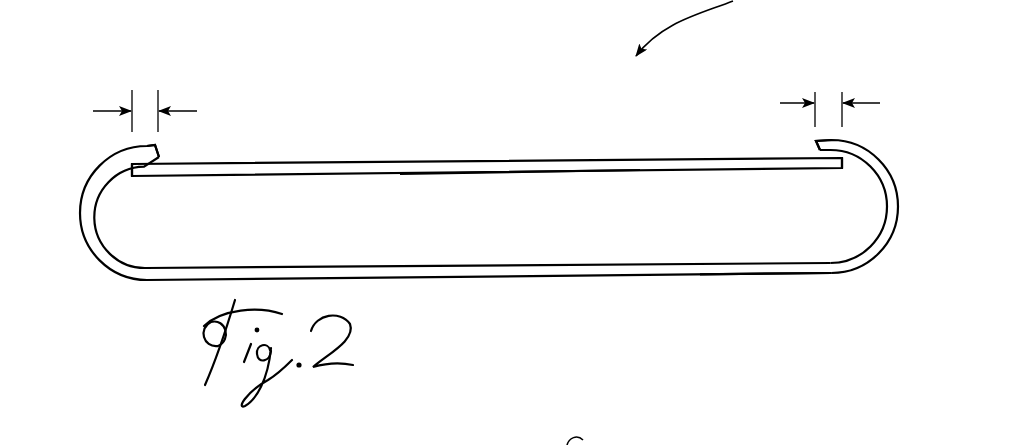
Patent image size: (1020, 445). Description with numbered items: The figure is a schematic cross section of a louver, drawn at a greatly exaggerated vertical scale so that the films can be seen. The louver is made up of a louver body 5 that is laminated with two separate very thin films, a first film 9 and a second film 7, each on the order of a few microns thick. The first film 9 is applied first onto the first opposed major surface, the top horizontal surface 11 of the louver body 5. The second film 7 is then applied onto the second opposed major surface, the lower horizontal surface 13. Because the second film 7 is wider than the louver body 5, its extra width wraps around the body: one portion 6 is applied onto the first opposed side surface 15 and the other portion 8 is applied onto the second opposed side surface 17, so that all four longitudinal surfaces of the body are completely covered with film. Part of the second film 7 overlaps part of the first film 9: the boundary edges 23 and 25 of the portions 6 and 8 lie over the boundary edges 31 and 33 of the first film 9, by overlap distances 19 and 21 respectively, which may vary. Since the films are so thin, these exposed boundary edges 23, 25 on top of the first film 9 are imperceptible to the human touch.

The louver body 5 is at (823, 238).
The portion of second film 6 is at (878, 183).
The second film 7 is at (642, 276).
The portion of second film 8 is at (87, 213).
The first film 9 is at (448, 163).
The top horizontal surface 11 is at (523, 177).
The lower horizontal surface 13 is at (465, 263).
The first opposed side surface 15 is at (876, 197).
The second opposed side surface 17 is at (105, 241).
The overlap distance 19 is at (850, 87).
The overlap distance 21 is at (166, 94).
The boundary edge 23 is at (813, 146).
The boundary edge 25 is at (157, 147).
The boundary edge 31 is at (837, 165).
The boundary edge 33 is at (141, 173).